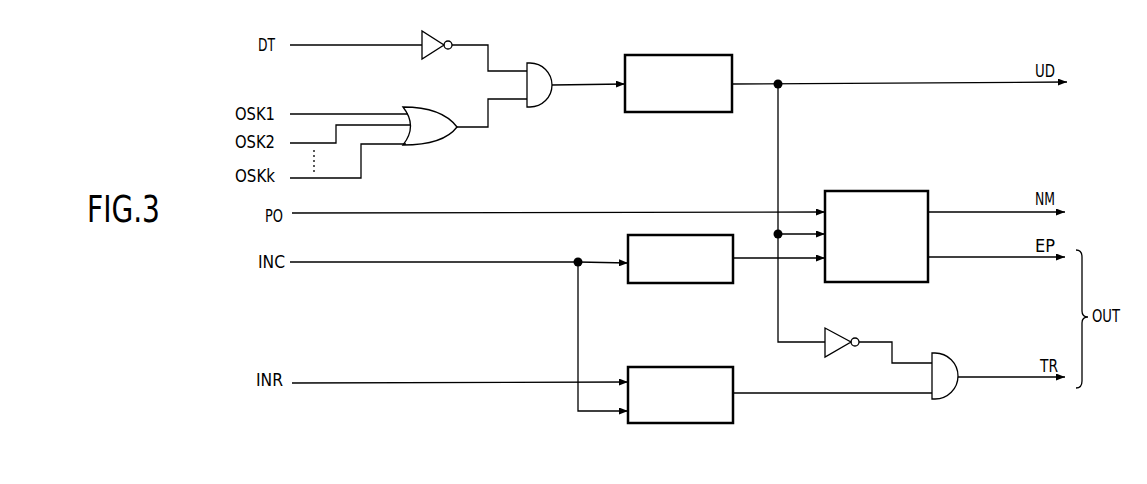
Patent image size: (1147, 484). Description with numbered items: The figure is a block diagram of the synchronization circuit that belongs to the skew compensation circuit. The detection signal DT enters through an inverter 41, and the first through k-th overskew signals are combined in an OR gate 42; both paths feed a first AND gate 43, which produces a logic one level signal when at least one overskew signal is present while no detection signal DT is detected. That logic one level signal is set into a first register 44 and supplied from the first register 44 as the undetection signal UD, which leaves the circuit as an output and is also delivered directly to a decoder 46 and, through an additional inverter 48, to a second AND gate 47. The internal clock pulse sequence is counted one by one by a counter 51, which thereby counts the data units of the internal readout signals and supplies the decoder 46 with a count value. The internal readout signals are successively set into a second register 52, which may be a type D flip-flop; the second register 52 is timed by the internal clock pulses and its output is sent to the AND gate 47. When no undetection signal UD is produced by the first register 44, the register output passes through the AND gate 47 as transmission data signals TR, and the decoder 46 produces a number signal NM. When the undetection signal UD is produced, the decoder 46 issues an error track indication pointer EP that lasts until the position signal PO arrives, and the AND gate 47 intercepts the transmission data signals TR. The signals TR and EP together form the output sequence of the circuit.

The inverter 41 is at (436, 36).
The OR gate 42 is at (431, 109).
The first AND gate 43 is at (541, 64).
The first register 44 is at (688, 55).
The decoder 46 is at (888, 191).
The second AND gate 47 is at (948, 360).
The additional inverter 48 is at (838, 333).
The counter 51 is at (702, 285).
The second register 52 is at (661, 367).